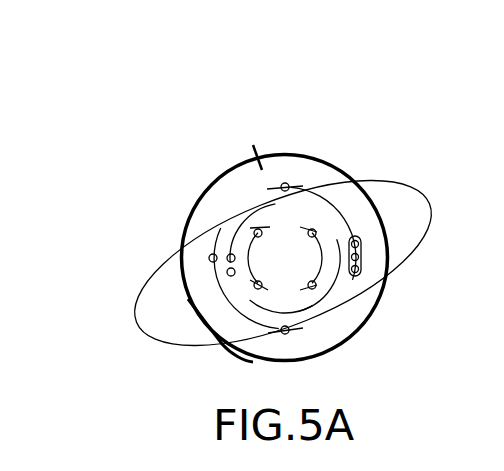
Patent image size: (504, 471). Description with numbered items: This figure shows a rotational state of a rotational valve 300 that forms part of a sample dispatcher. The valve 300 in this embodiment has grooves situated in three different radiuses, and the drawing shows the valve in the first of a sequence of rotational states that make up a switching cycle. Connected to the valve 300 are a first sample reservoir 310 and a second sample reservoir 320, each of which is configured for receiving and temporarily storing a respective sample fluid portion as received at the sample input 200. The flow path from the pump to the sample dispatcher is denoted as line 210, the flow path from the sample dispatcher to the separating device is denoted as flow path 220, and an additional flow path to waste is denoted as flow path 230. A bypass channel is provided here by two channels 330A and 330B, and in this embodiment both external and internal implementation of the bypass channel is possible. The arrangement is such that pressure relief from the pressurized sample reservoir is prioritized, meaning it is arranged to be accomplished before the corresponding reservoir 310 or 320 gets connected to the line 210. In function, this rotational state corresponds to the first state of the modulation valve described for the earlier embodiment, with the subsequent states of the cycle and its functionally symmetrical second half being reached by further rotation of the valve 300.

The rotational valve 300 is at (305, 126).
The first sample reservoir 310 is at (346, 170).
The second sample reservoir 320 is at (173, 350).
The bypass channel 330A is at (231, 258).
The bypass channel 330B is at (231, 275).
The sample fluid input 200 is at (316, 231).
The flow path from pump to sample dispatcher 210 is at (248, 291).
The flow path from sample dispatcher to separating device 220 is at (258, 285).
The flow path to waste 230 is at (345, 270).